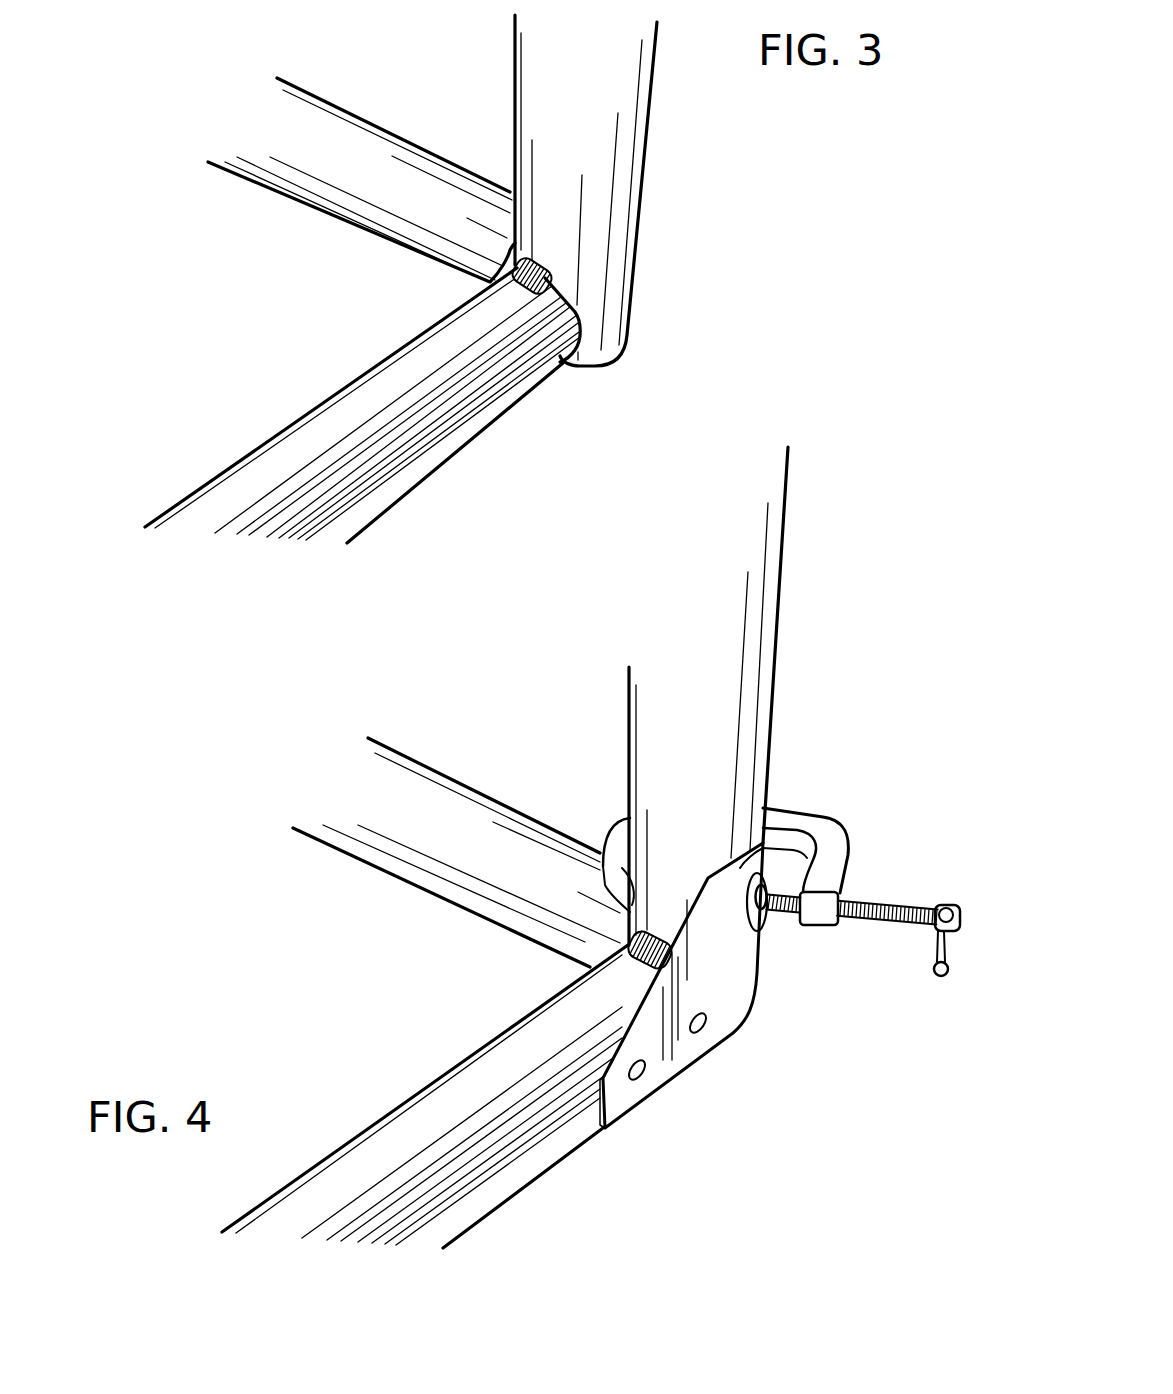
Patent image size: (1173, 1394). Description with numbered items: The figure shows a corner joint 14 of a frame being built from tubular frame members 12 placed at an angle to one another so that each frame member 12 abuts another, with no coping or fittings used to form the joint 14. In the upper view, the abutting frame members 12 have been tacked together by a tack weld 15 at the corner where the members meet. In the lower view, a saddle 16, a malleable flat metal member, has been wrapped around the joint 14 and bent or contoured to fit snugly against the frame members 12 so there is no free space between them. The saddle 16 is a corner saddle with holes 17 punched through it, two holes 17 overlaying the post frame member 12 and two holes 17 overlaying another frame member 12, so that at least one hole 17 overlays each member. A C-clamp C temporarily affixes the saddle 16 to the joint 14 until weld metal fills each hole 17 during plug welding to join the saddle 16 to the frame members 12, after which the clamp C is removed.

In FIG. 3, the frame member 12 is at (600, 170).
In FIG. 4, the frame member 12 is at (752, 693).
In FIG. 3, the joint 14 is at (616, 383).
In FIG. 4, the joint 14 is at (753, 1060).
In FIG. 3, the tack weld 15 is at (523, 287).
In FIG. 4, the tack weld 15 is at (590, 963).
In FIG. 4, the saddle 16 is at (750, 1017).
In FIG. 4, the hole 17 is at (757, 973).
In FIG. 4, the clamp C is at (832, 838).